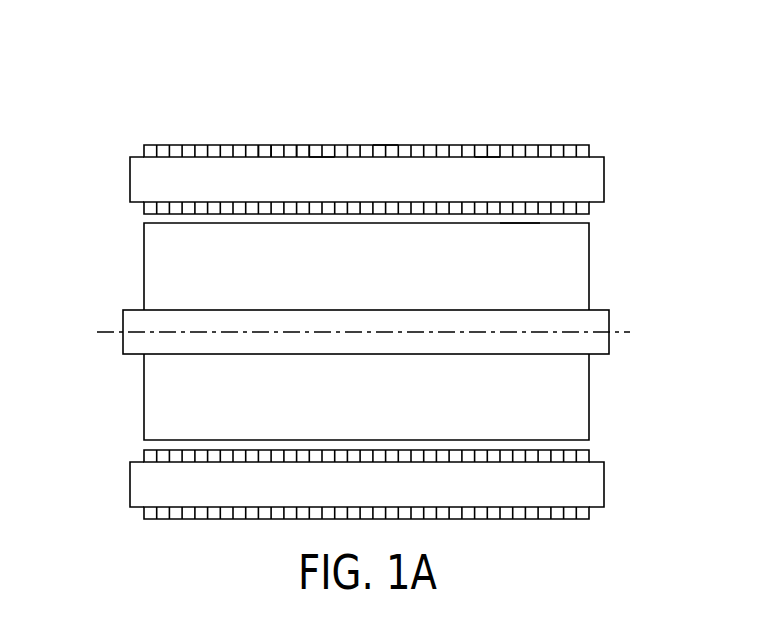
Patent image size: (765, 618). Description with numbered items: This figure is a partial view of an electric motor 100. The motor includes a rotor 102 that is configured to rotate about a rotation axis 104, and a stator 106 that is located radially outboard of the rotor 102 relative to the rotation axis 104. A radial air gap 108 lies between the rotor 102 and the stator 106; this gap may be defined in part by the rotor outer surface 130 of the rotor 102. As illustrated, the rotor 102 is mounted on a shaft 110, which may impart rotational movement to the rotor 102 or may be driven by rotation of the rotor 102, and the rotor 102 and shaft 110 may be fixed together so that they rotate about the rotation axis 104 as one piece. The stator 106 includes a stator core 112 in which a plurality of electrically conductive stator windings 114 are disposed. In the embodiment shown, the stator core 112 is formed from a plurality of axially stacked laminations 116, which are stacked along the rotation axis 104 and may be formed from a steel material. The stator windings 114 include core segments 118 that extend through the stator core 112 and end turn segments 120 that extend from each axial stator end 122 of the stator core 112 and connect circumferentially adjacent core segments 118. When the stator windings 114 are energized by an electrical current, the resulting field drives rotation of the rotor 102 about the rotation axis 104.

The electric motor 100 is at (104, 87).
The rotor 102 is at (382, 281).
The rotation axis 104 is at (622, 330).
The stator 106 is at (583, 110).
The radial air gap 108 is at (136, 212).
The shaft 110 is at (136, 345).
The stator core 112 is at (390, 148).
The stator windings 114 is at (487, 172).
The laminations 116 is at (302, 152).
The core segments 118 is at (325, 165).
The end turn segments 120 is at (140, 185).
The axial stator end 122 is at (144, 150).
The rotor outer surface 130 is at (520, 224).